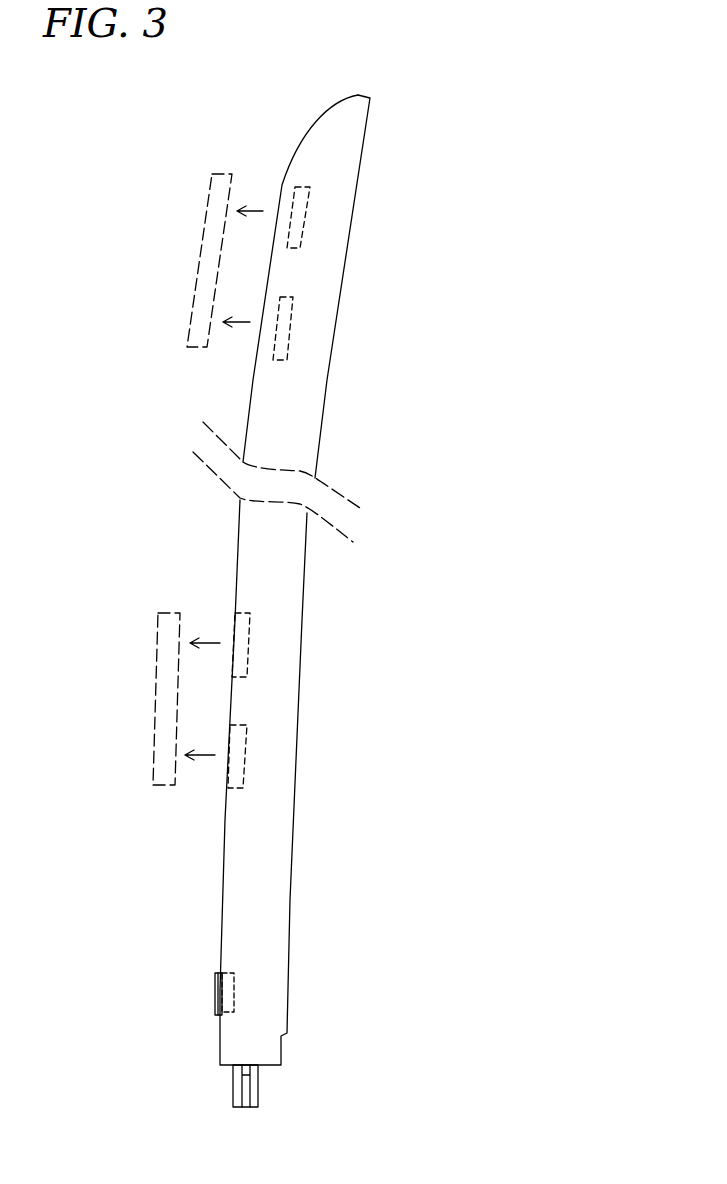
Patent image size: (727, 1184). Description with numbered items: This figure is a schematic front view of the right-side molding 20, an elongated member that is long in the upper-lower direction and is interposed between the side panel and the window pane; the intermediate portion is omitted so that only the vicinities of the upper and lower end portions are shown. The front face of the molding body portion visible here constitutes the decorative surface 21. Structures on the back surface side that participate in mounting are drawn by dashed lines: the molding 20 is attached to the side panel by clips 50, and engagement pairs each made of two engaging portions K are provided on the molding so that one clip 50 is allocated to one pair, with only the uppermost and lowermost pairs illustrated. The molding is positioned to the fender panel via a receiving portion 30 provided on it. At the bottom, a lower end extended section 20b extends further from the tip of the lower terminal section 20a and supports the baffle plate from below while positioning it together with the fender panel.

The molding 20 is at (319, 608).
The decorative surface 21 is at (283, 433).
The lower terminal section 20a is at (262, 990).
The lower end extended section 20b is at (255, 1087).
The receiving portion 30 is at (213, 997).
The clip 50 is at (197, 267).
The engaging portion K is at (305, 220).